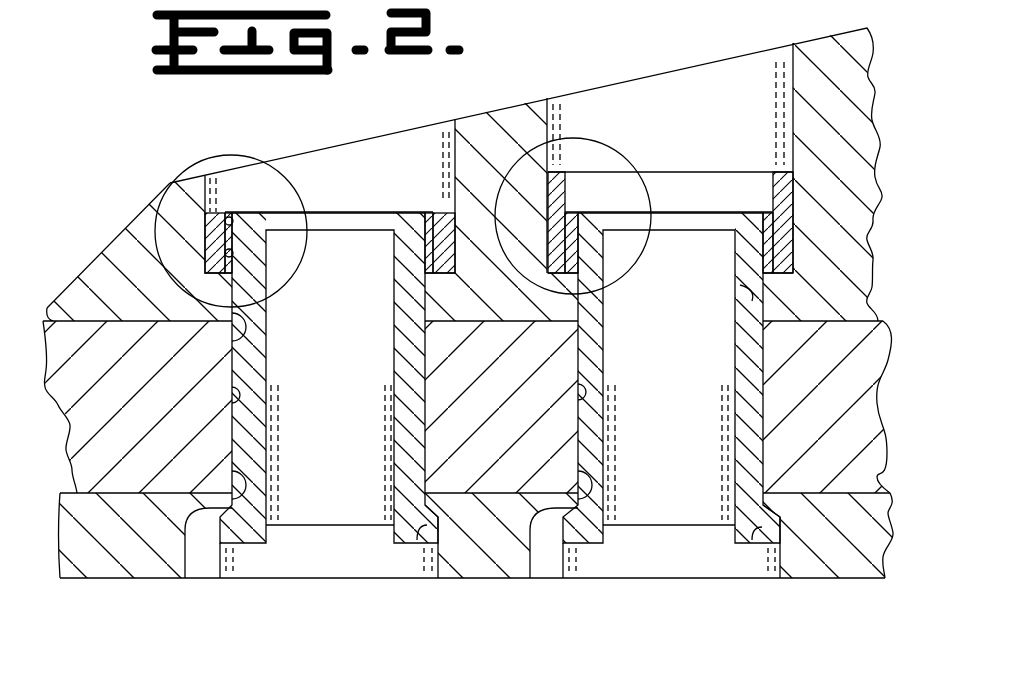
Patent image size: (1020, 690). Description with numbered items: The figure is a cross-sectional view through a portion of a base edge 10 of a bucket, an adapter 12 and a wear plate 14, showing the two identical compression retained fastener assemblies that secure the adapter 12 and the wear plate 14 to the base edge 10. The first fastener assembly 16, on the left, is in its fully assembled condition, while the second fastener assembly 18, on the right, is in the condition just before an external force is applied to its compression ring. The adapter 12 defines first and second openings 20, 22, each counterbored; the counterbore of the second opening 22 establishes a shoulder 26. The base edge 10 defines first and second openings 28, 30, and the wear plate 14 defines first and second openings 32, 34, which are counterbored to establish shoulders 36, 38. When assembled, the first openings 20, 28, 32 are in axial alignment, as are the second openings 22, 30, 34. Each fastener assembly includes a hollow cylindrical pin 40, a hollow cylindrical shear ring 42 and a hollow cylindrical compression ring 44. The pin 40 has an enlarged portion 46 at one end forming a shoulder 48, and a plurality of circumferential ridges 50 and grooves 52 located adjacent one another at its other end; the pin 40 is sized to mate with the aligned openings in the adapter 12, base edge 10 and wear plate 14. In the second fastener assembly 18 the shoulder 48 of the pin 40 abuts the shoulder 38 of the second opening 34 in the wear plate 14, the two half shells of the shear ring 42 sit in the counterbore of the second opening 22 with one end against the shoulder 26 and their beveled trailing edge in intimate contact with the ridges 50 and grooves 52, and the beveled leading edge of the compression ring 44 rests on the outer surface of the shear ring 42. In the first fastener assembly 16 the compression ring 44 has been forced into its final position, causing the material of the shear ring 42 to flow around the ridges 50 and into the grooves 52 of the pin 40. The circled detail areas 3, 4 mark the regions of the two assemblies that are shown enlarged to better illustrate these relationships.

The detail view circle for FIG. 3 is at (547, 140).
The detail view circle for FIG. 4 is at (255, 151).
The base edge 10 is at (84, 418).
The adapter 12 is at (115, 252).
The wear plate 14 is at (77, 542).
The first compression retained fastener assembly 16 is at (105, 283).
The second compression retained fastener assembly 18 is at (850, 365).
The first opening 20 is at (232, 343).
The second opening 22 is at (737, 288).
The shoulder 26 is at (795, 252).
The first opening 28 is at (233, 402).
The second opening 30 is at (576, 400).
The first opening 32 is at (233, 470).
The second opening 34 is at (580, 490).
The shoulder 36 is at (250, 578).
The shoulder 38 is at (587, 578).
The hollow cylindrical pin 40 is at (252, 363).
The hollow cylindrical shear ring 42 is at (226, 242).
The hollow cylindrical compression ring 44 is at (212, 208).
The enlarged portion 46 is at (400, 578).
The shoulder 48 is at (176, 578).
The circumferential ridges 50 is at (230, 218).
The circumferential grooves 52 is at (266, 214).